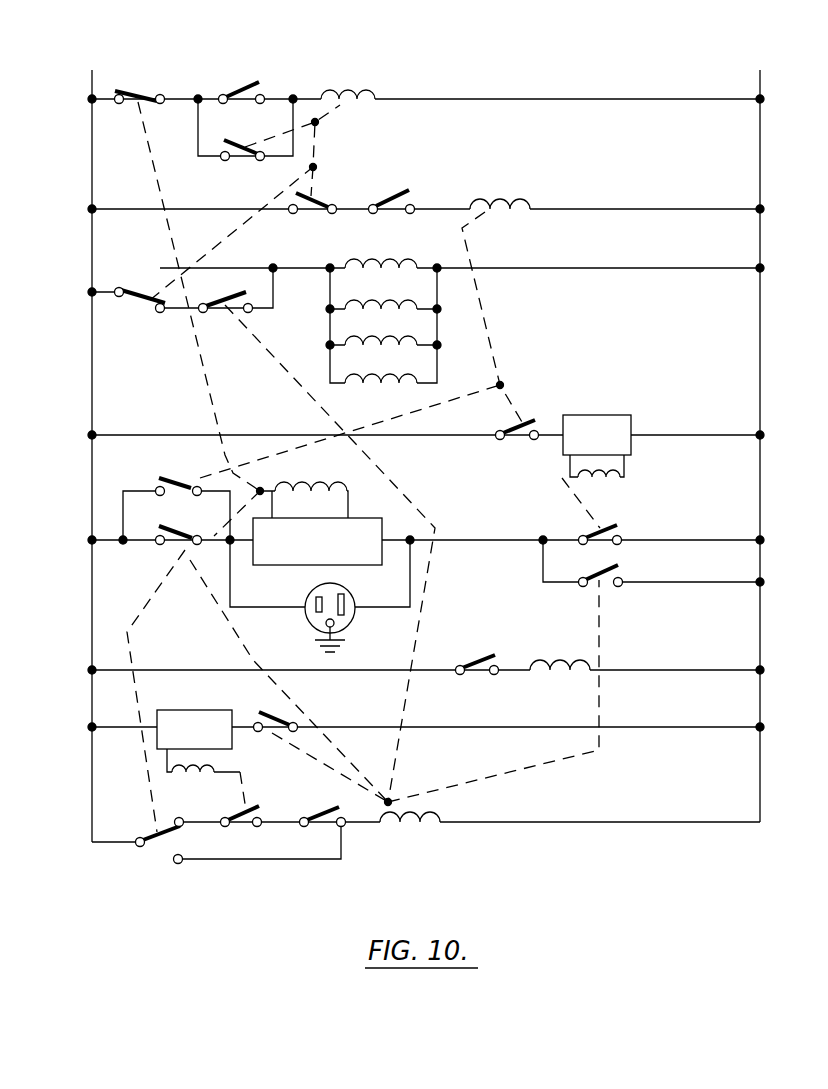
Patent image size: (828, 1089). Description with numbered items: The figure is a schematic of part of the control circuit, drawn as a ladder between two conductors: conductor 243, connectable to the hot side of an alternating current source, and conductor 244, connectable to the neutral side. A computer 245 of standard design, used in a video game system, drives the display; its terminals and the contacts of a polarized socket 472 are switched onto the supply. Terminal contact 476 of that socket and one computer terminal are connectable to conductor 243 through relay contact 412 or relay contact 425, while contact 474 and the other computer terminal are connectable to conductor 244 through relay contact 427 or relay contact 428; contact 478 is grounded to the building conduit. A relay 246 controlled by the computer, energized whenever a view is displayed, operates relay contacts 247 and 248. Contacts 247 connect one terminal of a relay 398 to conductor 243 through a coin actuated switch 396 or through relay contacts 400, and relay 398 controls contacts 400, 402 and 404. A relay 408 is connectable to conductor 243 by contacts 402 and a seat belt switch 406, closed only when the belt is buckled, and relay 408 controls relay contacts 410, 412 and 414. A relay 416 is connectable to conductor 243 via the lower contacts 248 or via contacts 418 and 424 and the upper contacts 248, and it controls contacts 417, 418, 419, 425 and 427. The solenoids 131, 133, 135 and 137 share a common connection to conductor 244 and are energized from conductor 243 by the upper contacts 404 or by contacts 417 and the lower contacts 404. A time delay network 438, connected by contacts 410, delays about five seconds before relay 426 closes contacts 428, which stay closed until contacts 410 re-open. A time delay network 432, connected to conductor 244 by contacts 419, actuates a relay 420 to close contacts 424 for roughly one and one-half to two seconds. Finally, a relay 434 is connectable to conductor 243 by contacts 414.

The conductor 243 is at (91, 73).
The conductor 244 is at (771, 73).
The relay contacts 247 is at (150, 80).
The coin actuated switch 396 is at (238, 90).
The relay 398 is at (341, 91).
The relay contacts 400 is at (238, 158).
The relay contacts 402 is at (320, 200).
The relay contacts 404 is at (136, 308).
The seat belt switch 406 is at (404, 190).
The relay 408 is at (503, 201).
The solenoid 131 is at (392, 252).
The solenoid 133 is at (376, 304).
The solenoid 135 is at (376, 340).
The solenoid 137 is at (386, 394).
The relay contacts 417 is at (223, 315).
The relay contacts 410 is at (524, 415).
The time delay network 438 is at (598, 413).
The relay 426 is at (605, 488).
The relay contacts 428 is at (585, 530).
The relay contacts 427 is at (606, 592).
The relay contacts 412 is at (180, 472).
The relay contacts 425 is at (174, 544).
The relay 246 is at (318, 470).
The computer 245 is at (372, 508).
The polarized socket 472 is at (306, 600).
The contact 474 is at (344, 605).
The contact 476 is at (308, 620).
The contact 478 is at (346, 637).
The relay contacts 414 is at (482, 659).
The relay 434 is at (550, 684).
The time delay network 432 is at (190, 710).
The relay contacts 419 is at (270, 707).
The relay 420 is at (197, 786).
The relay contacts 248 is at (158, 846).
The relay contacts 424 is at (252, 832).
The relay contacts 418 is at (326, 811).
The relay 416 is at (420, 834).